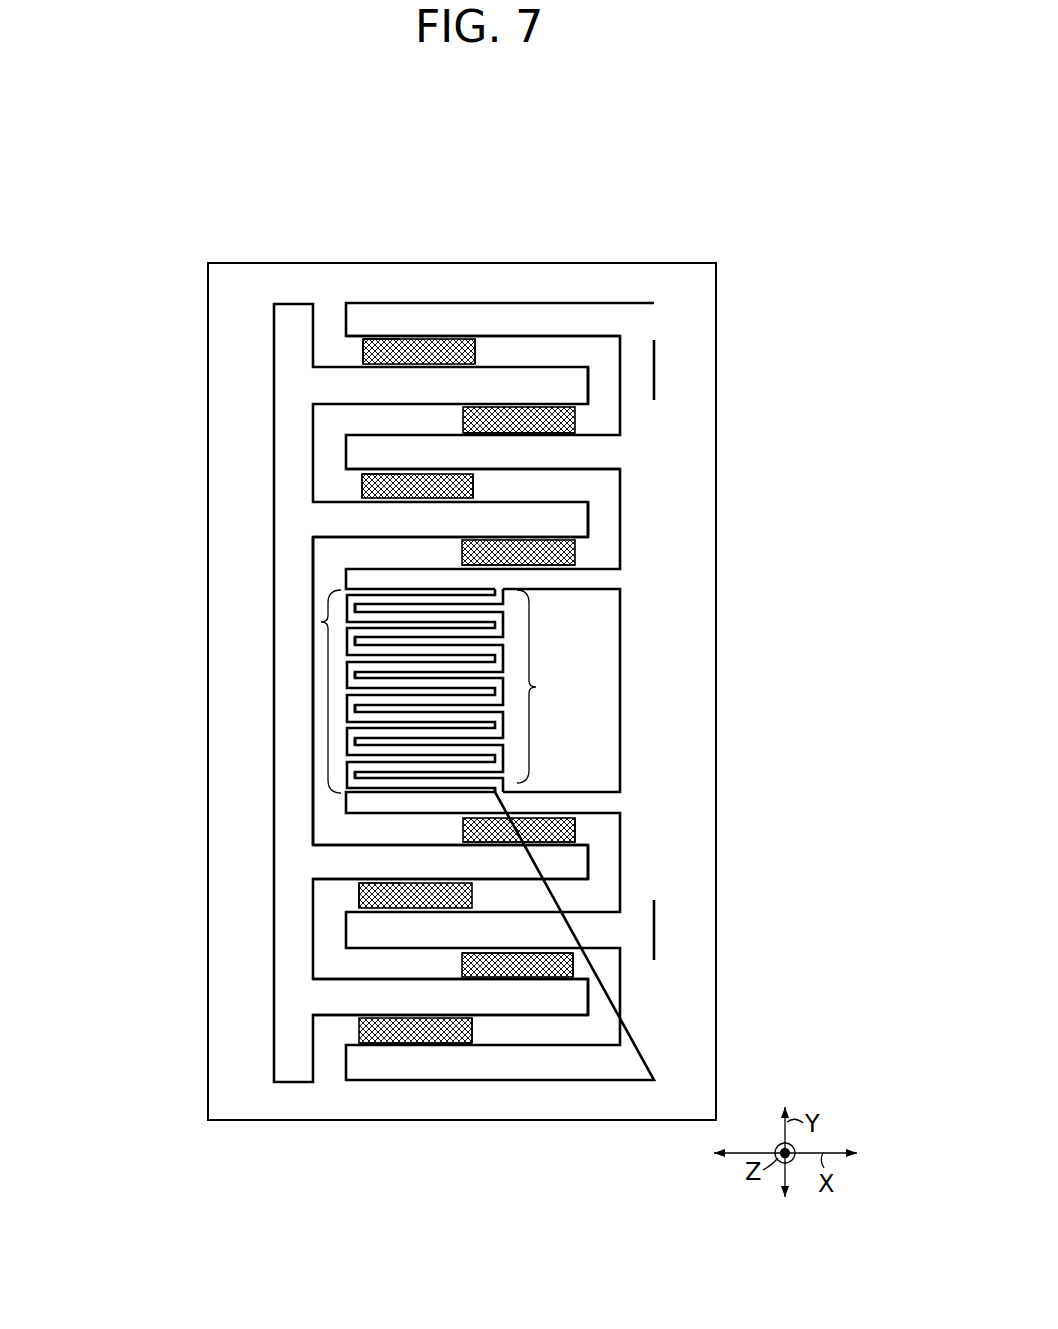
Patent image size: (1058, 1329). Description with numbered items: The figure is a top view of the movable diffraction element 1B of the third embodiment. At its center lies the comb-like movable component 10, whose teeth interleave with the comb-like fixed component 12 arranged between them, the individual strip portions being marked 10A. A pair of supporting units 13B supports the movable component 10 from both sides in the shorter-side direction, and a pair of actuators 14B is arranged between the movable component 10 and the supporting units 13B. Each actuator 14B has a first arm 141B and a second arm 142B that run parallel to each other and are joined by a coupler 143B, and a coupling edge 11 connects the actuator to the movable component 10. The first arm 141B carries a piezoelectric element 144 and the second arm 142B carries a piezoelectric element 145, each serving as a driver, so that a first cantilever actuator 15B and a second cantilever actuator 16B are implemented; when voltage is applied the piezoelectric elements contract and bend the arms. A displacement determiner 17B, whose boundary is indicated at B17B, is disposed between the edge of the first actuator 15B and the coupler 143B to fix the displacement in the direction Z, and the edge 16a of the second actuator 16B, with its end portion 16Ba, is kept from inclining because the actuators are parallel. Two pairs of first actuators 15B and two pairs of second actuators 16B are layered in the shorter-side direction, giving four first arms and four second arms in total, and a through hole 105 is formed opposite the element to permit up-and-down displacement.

The movable diffraction element 1B is at (733, 297).
The movable component 10 is at (321, 622).
The resistor slit portion 10A is at (352, 624).
The coupling edge 11 is at (323, 570).
The fixed component 12 is at (536, 687).
The supporting units 13B is at (332, 312).
The actuators 14B is at (623, 322).
The first arm 141B is at (505, 343).
The second arm 142B is at (373, 560).
The coupler 143B is at (612, 394).
The piezoelectric element 144 is at (462, 485).
The piezoelectric element 145 is at (547, 417).
The first actuator 15B is at (383, 336).
The second actuator 16B is at (512, 400).
The edge of the second actuator 16a is at (585, 832).
The conductor end portion 16Ba is at (588, 967).
The displacement determiner 17B is at (538, 345).
The insulating layer boundary B17B is at (548, 484).
The through hole 105 is at (650, 352).